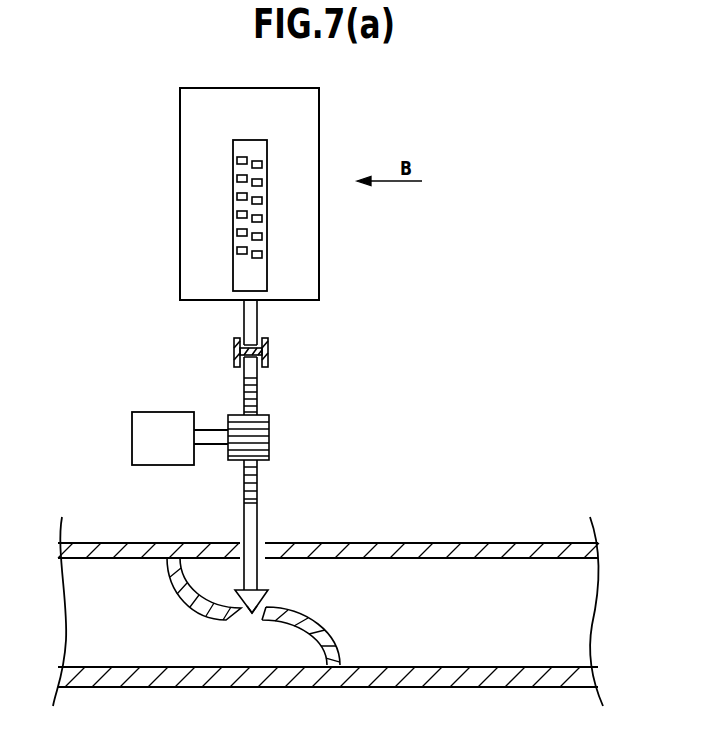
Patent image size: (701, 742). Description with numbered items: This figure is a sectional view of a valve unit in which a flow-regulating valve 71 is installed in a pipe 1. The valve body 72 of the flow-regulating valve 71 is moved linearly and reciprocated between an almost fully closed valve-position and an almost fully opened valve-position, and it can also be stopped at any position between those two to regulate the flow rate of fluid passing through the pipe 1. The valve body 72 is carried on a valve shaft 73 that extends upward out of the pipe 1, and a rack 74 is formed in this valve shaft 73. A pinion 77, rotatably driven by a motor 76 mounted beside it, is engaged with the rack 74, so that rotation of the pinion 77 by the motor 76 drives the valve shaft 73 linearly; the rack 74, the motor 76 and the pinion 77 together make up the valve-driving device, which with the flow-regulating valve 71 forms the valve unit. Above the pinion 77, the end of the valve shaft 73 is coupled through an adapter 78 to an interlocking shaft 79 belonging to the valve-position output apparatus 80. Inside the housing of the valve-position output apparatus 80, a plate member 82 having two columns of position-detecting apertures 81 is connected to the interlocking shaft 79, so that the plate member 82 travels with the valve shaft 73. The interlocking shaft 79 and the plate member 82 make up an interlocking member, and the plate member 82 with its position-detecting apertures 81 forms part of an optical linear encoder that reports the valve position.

The pipe 1 is at (355, 546).
The flow-regulating valve 71 is at (265, 598).
The valve body 72 is at (252, 614).
The valve shaft 73 is at (248, 522).
The rack 74 is at (258, 488).
The motor 76 is at (152, 412).
The pinion 77 is at (270, 430).
The adapter 78 is at (270, 352).
The interlocking shaft 79 is at (246, 316).
The valve-position output apparatus 80 is at (235, 194).
The position-detecting apertures 81 is at (238, 250).
The plate member 82 is at (267, 148).